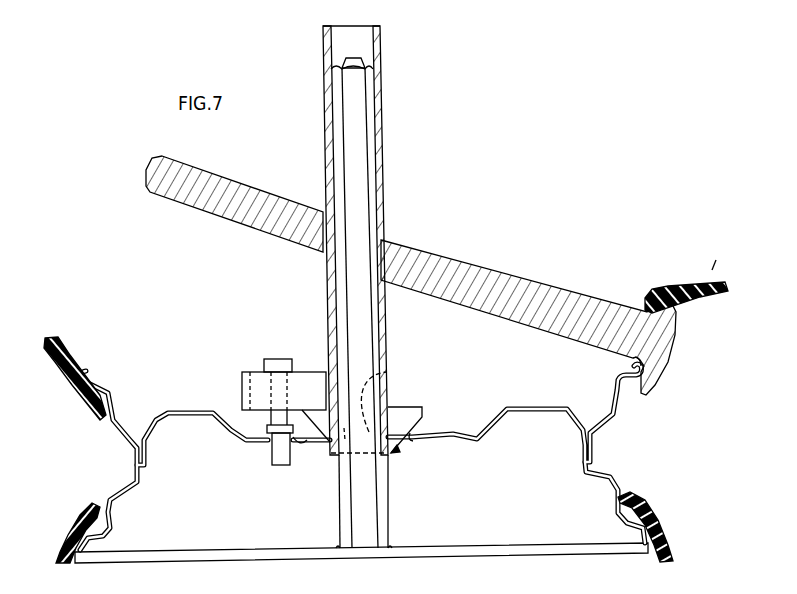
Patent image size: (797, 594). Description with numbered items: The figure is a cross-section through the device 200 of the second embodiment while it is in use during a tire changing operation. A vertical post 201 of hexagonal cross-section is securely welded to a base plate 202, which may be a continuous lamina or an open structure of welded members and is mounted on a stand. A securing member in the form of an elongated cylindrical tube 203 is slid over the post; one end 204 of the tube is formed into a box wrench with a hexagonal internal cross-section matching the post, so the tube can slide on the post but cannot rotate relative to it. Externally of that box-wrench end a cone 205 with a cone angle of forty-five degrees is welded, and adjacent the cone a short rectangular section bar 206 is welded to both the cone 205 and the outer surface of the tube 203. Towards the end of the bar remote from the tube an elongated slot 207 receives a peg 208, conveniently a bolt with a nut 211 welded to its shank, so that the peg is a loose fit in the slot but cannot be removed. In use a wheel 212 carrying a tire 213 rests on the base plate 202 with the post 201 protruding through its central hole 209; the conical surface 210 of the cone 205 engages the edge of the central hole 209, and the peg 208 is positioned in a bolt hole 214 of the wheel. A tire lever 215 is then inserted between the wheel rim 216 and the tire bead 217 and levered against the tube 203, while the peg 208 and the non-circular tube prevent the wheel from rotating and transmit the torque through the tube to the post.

The device 200 is at (298, 309).
The vertical post 201 is at (360, 117).
The base plate 202 is at (470, 548).
The elongated cylindrical tube 203 is at (378, 52).
The end of tube 204 is at (386, 372).
The cone 205 is at (425, 412).
The rectangular section bar 206 is at (308, 378).
The elongated slot 207 is at (258, 373).
The peg 208 is at (278, 416).
The central hole 209 is at (412, 440).
The conical surface 210 is at (396, 452).
The nut 211 is at (275, 436).
The wheel 212 is at (168, 413).
The tire 213 is at (62, 358).
The bolt hole 214 is at (291, 438).
The tire lever 215 is at (480, 277).
The wheel rim 216 is at (638, 365).
The tire bead 217 is at (678, 290).